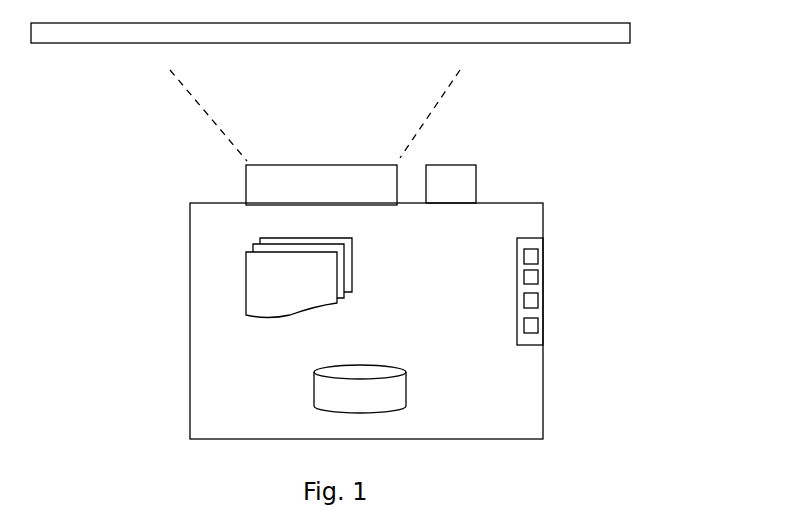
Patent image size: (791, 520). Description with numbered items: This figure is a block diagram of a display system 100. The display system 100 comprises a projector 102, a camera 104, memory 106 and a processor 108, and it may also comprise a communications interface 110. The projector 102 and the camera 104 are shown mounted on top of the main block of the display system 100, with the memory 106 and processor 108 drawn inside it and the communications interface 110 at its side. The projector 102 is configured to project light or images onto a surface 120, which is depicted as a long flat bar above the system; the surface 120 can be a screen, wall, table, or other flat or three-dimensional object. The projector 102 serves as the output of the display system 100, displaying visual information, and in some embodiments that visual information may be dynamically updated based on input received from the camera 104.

The display system 100 is at (631, 250).
The projector 102 is at (257, 185).
The camera 104 is at (517, 170).
The memory 106 is at (400, 392).
The processor 108 is at (274, 313).
The communications interface 110 is at (517, 297).
The surface 120 is at (602, 47).